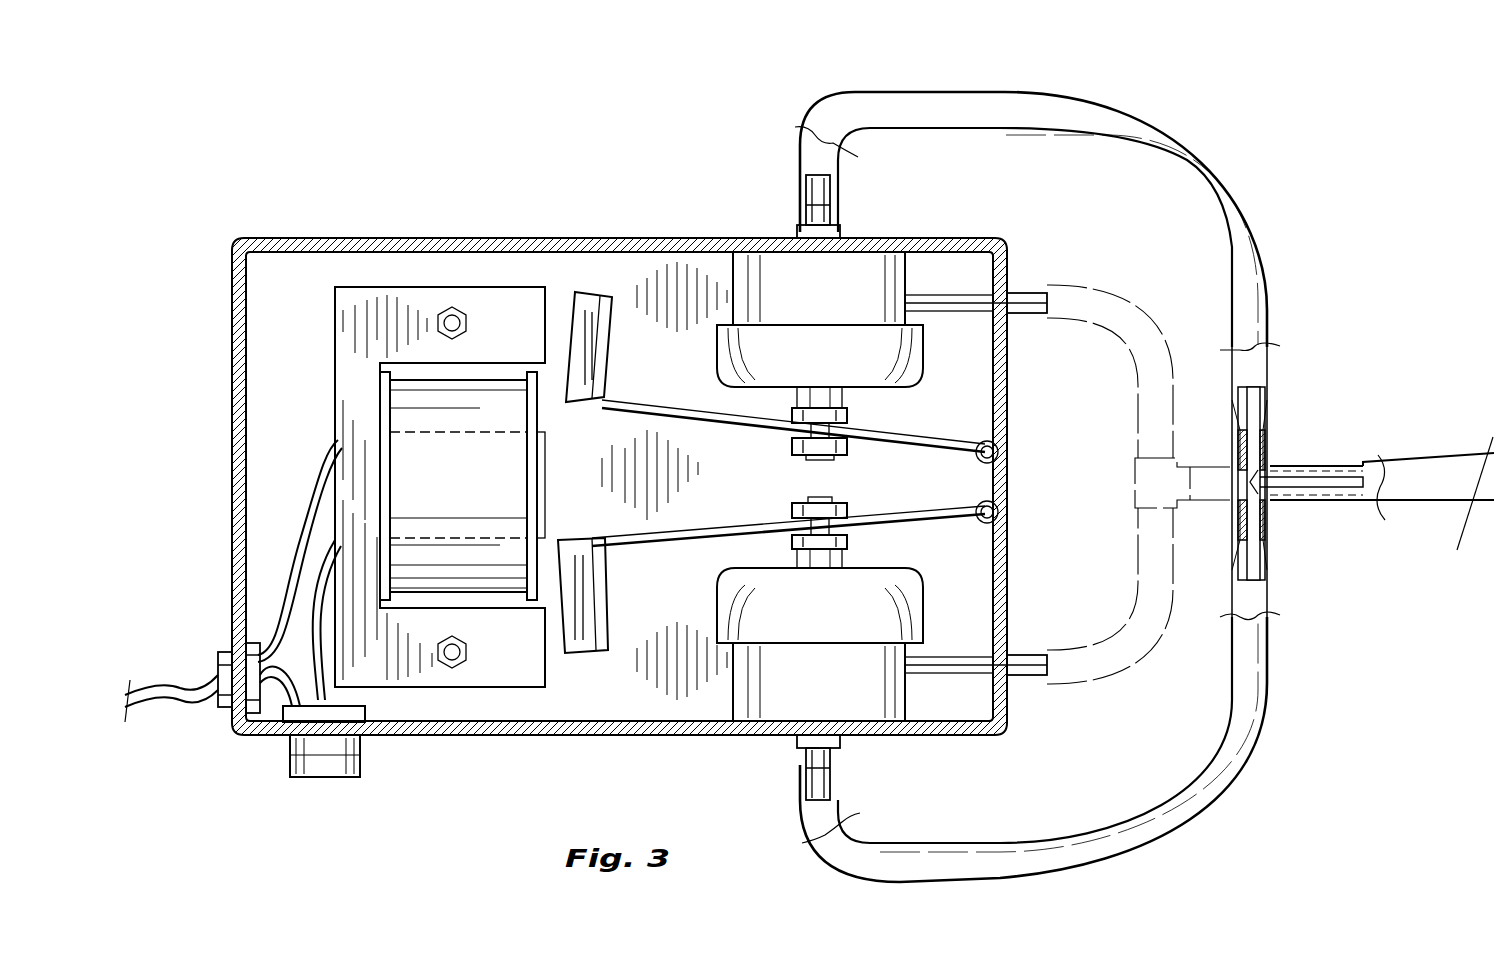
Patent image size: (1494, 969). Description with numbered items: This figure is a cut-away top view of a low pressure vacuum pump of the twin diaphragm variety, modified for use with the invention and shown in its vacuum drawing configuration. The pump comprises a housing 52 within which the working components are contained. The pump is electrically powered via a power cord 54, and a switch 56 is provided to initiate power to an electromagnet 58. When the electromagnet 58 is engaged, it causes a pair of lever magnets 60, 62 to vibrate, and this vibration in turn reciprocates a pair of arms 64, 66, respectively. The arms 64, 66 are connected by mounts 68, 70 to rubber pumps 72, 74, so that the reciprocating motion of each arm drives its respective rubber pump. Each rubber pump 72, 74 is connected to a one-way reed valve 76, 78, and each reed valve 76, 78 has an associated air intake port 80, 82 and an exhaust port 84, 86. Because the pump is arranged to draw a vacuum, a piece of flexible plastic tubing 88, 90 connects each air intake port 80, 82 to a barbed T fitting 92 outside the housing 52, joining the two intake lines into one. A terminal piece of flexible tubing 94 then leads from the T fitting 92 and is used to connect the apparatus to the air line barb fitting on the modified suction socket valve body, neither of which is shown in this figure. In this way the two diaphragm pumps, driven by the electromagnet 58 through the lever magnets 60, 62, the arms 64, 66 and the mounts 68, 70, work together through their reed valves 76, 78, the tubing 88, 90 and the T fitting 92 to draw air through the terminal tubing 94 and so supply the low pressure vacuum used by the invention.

The housing 52 is at (360, 238).
The power cord 54 is at (180, 682).
The switch 56 is at (290, 760).
The electromagnet 58 is at (537, 413).
The lever magnet 60 is at (585, 290).
The lever magnet 62 is at (580, 655).
The arm 64 is at (665, 408).
The arm 66 is at (665, 546).
The mount 68 is at (850, 422).
The mount 70 is at (850, 540).
The rubber pump 72 is at (897, 330).
The rubber pump 74 is at (897, 635).
The one-way reed valve 76 is at (826, 300).
The one-way reed valve 78 is at (826, 621).
The air intake port 80 is at (806, 190).
The air intake port 82 is at (806, 785).
The exhaust port 84 is at (1015, 292).
The exhaust port 86 is at (1020, 680).
The flexible plastic tubing 88 is at (1110, 130).
The flexible plastic tubing 90 is at (1172, 815).
The barbed T fitting 92 is at (1268, 505).
The terminal piece of flexible tubing 94 is at (1412, 478).